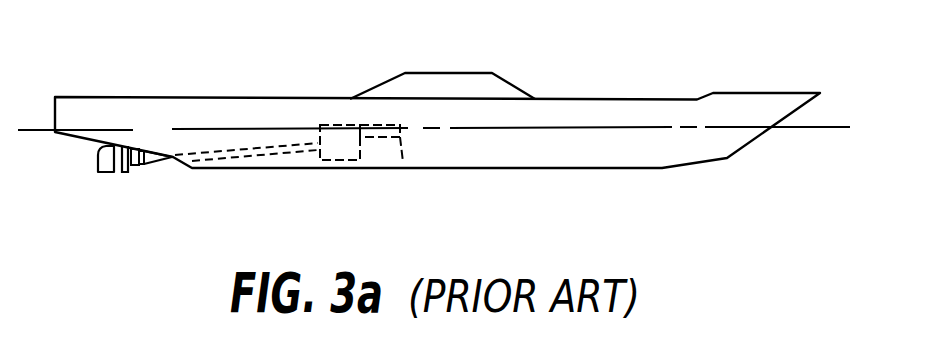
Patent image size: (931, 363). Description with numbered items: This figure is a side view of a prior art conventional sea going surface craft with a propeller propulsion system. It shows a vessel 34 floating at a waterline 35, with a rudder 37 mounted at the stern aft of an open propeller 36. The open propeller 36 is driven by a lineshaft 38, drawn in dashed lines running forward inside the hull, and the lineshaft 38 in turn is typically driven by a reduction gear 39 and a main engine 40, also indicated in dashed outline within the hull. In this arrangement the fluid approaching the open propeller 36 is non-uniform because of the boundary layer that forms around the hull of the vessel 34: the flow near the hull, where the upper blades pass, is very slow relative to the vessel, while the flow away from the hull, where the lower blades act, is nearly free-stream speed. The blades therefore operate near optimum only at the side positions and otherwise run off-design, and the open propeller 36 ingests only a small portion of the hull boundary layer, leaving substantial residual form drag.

The vessel 34 is at (552, 99).
The waterline 35 is at (623, 124).
The open propeller 36 is at (125, 172).
The rudder 37 is at (100, 173).
The lineshaft 38 is at (218, 157).
The reduction gear 39 is at (342, 157).
The main engine 40 is at (402, 153).